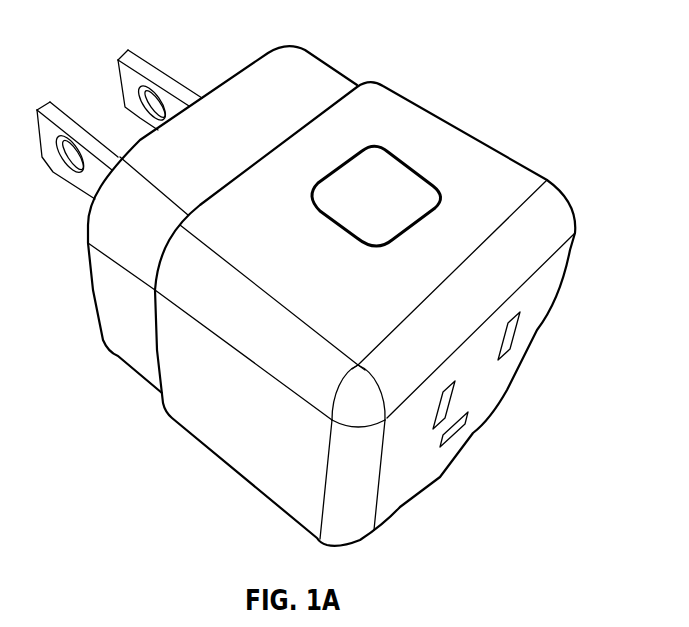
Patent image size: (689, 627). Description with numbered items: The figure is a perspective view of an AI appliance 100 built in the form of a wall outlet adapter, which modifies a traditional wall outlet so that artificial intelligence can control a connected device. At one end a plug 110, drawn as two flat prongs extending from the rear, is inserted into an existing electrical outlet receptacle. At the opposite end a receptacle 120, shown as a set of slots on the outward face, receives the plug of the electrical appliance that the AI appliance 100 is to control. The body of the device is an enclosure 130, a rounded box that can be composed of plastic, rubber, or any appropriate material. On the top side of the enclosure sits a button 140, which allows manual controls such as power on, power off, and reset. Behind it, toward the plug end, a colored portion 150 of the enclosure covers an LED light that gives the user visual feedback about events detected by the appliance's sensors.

The AI appliance 100 is at (527, 87).
The plug 110 is at (128, 50).
The receptacle 120 is at (537, 330).
The enclosure 130 is at (268, 437).
The button 140 is at (375, 183).
The colored portion 150 is at (330, 78).